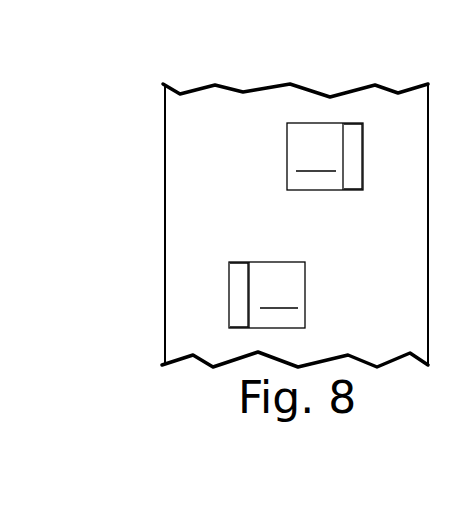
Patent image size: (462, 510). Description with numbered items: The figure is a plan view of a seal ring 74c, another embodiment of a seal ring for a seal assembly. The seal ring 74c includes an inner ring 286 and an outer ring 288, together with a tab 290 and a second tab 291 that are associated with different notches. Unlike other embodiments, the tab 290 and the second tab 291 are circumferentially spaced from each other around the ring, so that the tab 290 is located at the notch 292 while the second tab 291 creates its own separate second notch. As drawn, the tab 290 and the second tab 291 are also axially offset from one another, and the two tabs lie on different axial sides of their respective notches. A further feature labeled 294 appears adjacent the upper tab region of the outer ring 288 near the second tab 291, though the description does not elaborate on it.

The seal ring 74c is at (237, 225).
The inner ring 286 is at (158, 152).
The outer ring 288 is at (296, 225).
The tab 290 is at (242, 299).
The second tab 291 is at (351, 130).
The notch 292 is at (277, 262).
The icon boundary 294 is at (312, 122).